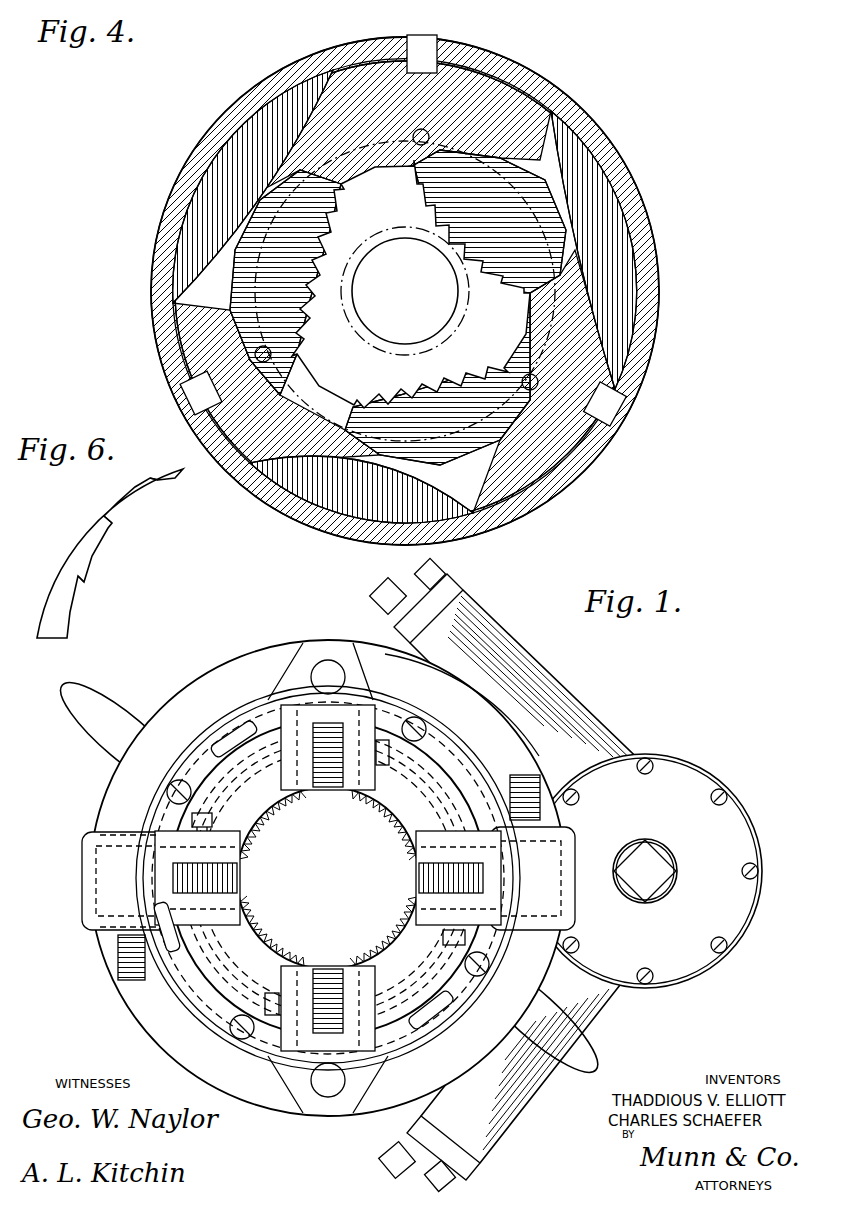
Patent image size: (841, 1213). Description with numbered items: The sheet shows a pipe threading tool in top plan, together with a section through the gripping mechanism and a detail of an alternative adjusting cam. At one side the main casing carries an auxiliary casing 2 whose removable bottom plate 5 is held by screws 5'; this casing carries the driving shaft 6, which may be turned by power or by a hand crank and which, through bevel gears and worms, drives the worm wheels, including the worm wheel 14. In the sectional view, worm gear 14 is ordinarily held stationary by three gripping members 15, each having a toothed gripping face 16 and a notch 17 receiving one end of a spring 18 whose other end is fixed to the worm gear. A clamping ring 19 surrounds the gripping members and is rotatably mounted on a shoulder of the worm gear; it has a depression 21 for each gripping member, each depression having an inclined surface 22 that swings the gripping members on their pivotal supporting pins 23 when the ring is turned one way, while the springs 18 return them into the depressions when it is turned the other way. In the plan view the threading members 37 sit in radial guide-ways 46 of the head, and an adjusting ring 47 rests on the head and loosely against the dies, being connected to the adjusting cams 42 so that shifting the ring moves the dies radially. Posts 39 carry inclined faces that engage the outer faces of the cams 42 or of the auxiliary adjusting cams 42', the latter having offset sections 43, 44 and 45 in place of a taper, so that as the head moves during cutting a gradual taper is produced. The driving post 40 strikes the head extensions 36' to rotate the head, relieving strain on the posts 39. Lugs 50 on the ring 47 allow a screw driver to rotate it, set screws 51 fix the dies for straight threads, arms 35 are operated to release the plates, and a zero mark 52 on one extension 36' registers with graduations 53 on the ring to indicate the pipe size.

In FIG. 1, the auxiliary casing 2 is at (733, 948).
In FIG. 1, the bottom plate 5 is at (645, 960).
In FIG. 1, the screws 5' is at (660, 818).
In FIG. 1, the driving shaft 6 is at (658, 858).
In FIG. 4, the worm wheel 14 is at (547, 293).
In FIG. 4, the gripping members 15 is at (330, 252).
In FIG. 1, the gripping members 15 is at (266, 822).
In FIG. 4, the toothed or gripping face 16 is at (463, 352).
In FIG. 4, the notch 17 is at (552, 476).
In FIG. 4, the spring 18 is at (540, 378).
In FIG. 4, the clamping ring 19 is at (600, 335).
In FIG. 4, the depression 21 is at (263, 120).
In FIG. 4, the inclined surface 22 is at (483, 510).
In FIG. 4, the pivotal supporting pins 23 is at (610, 400).
In FIG. 1, the arms 35 is at (96, 728).
In FIG. 1, the head extensions 36' is at (323, 871).
In FIG. 1, the threading members 37 is at (330, 782).
In FIG. 1, the posts 39 is at (128, 893).
In FIG. 1, the driving post 40 is at (127, 940).
In FIG. 1, the adjusting cams 42 is at (404, 763).
In FIG. 6, the auxiliary adjusting cams 42' is at (126, 532).
In FIG. 6, the offset section 43 is at (65, 630).
In FIG. 6, the offset section 44 is at (82, 580).
In FIG. 6, the offset section 45 is at (150, 485).
In FIG. 1, the guide-way 46 is at (453, 868).
In FIG. 1, the adjusting ring 47 is at (448, 748).
In FIG. 1, the lugs 50 is at (228, 733).
In FIG. 1, the set screws 51 is at (272, 993).
In FIG. 1, the zero mark 52 is at (105, 840).
In FIG. 1, the graduations or marks 53 is at (185, 990).